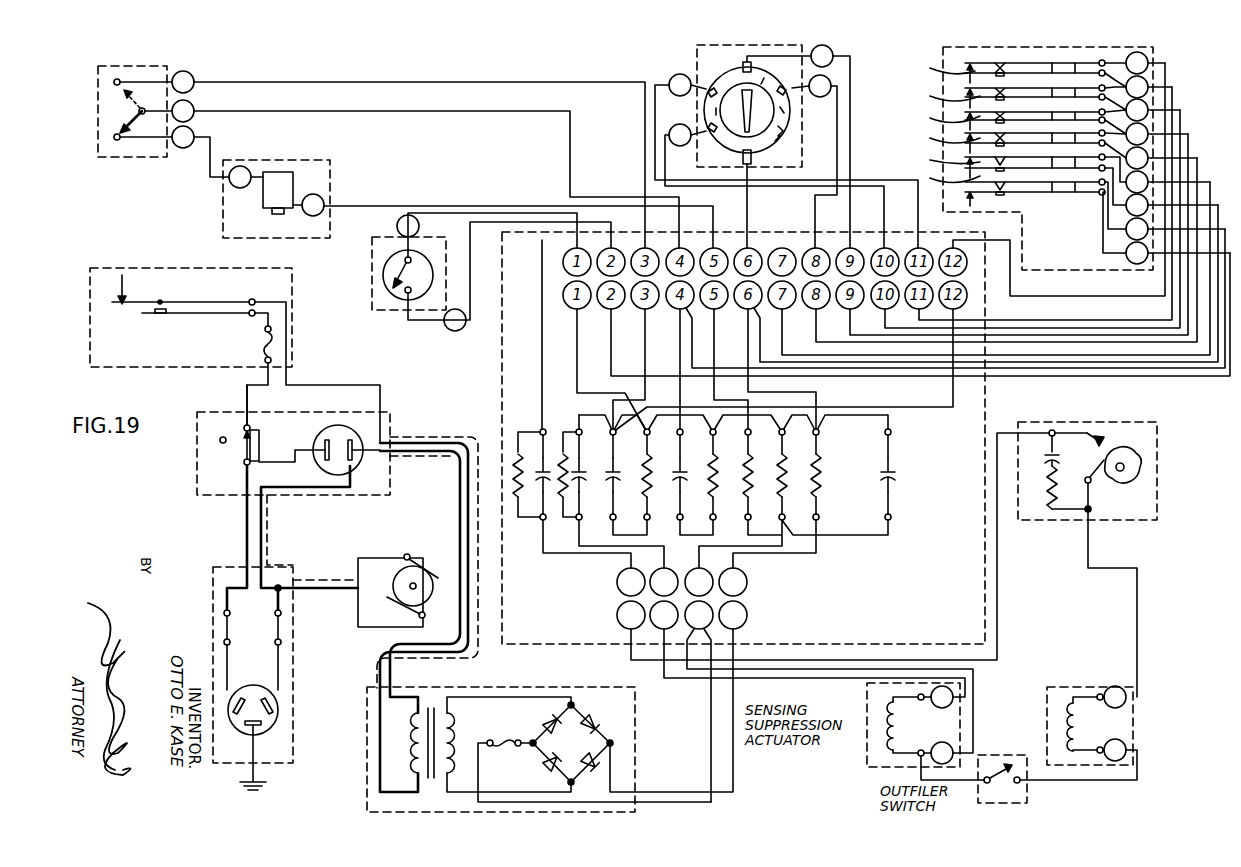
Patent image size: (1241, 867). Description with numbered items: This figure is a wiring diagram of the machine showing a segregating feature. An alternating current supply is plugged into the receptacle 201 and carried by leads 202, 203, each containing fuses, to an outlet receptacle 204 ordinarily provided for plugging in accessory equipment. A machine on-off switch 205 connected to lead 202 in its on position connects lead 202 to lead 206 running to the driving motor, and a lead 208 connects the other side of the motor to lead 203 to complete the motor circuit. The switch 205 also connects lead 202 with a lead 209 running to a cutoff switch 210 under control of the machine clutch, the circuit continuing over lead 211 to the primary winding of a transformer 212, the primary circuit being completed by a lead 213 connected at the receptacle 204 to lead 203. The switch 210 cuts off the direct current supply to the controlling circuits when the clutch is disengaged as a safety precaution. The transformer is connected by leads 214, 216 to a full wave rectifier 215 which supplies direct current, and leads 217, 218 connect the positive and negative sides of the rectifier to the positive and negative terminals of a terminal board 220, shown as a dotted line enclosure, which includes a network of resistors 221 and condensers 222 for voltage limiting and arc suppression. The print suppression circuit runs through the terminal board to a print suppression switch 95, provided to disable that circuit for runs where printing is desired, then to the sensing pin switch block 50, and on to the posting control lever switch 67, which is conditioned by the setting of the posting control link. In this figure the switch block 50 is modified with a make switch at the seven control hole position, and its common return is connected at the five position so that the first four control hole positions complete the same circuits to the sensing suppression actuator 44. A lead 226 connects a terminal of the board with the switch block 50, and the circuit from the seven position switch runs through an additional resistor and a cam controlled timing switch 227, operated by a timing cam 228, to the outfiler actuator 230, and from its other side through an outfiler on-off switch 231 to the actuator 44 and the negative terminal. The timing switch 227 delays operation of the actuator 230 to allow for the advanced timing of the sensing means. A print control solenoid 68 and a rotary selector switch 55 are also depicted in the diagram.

The posting control lever switch 67 is at (138, 108).
The print control solenoid 68 is at (287, 186).
The rotary selector switch 55 is at (729, 92).
The sensing pin switch block 50 is at (1178, 76).
The print suppression switch 95 is at (383, 266).
The cutoff switch 210 is at (235, 302).
The lead 211 is at (326, 386).
The lead 209 is at (245, 393).
The outlet receptacle 204 is at (340, 426).
The lead 206 is at (262, 448).
The machine on-off switch 205 is at (239, 450).
The lead 203 is at (318, 488).
The lead 202 is at (227, 676).
The receptacle 201 is at (276, 711).
The lead 208 is at (357, 615).
The transformer 212 is at (432, 712).
The lead 213 is at (378, 731).
The lead 214 is at (535, 694).
The full wave rectifier 215 is at (574, 752).
The lead 216 is at (504, 792).
The lead 217 is at (733, 768).
The lead 218 is at (709, 735).
The terminal board 220 is at (743, 438).
The resistors 221 is at (823, 472).
The condensers 222 is at (897, 484).
The lead 226 is at (932, 368).
The cam controlled timing switch 227 is at (1104, 446).
The timing cam 228 is at (1138, 462).
The sensing suppression actuator 44 is at (937, 724).
The outfiler actuator 230 is at (1105, 724).
The outfiler on-off switch 231 is at (1028, 792).